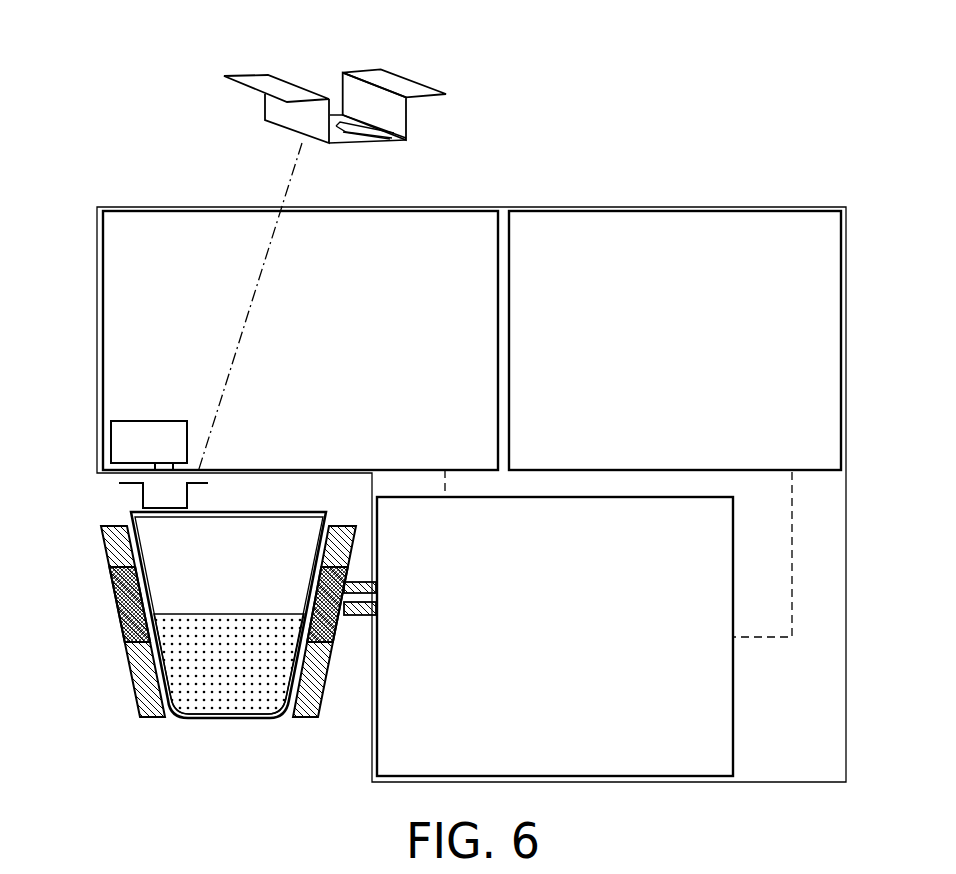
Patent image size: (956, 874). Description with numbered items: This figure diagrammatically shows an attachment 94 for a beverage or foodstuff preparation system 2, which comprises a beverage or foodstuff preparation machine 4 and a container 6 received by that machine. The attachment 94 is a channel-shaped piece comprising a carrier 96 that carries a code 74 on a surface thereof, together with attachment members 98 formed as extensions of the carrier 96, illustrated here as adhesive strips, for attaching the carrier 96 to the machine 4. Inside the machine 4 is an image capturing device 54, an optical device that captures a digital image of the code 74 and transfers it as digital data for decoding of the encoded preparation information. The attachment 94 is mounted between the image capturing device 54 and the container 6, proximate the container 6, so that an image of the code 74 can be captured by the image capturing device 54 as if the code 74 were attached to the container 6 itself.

The beverage or foodstuff preparation system 2 is at (82, 107).
The beverage or foodstuff preparation machine 4 is at (76, 203).
The container 6 is at (220, 576).
The image capturing device 54 is at (133, 457).
The code 74 is at (353, 136).
The attachment 94 is at (353, 103).
The carrier 96 is at (382, 137).
The attachment member 98 is at (258, 80).